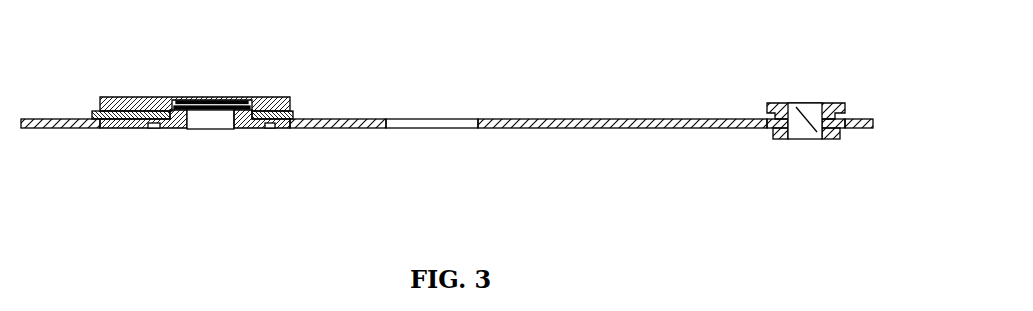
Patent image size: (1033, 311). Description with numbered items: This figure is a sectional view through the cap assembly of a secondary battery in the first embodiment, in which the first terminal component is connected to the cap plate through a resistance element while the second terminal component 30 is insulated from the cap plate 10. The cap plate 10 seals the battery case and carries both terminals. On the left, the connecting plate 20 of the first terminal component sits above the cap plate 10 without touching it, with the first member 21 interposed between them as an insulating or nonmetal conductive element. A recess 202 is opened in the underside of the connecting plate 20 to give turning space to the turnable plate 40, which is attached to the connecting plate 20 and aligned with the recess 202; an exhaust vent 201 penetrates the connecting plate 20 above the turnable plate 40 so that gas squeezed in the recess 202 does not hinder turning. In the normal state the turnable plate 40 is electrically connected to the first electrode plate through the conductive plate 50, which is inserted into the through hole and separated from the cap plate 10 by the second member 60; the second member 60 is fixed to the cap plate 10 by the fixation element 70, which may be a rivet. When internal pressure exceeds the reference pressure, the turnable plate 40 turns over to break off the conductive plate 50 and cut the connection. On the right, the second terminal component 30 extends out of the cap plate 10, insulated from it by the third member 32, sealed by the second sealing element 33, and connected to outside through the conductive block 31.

The cap plate 10 is at (505, 119).
The connecting plate 20 is at (238, 100).
The exhaust vent 201 is at (212, 100).
The recess 202 is at (226, 99).
The first member 21 is at (292, 112).
The turnable plate 40 is at (173, 98).
The conductive plate 50 is at (232, 130).
The second member 60 is at (172, 128).
The fixation element 70 is at (277, 130).
The second terminal component 30 is at (802, 140).
The conductive block 31 is at (777, 103).
The third member 32 is at (767, 118).
The second sealing element 33 is at (787, 130).